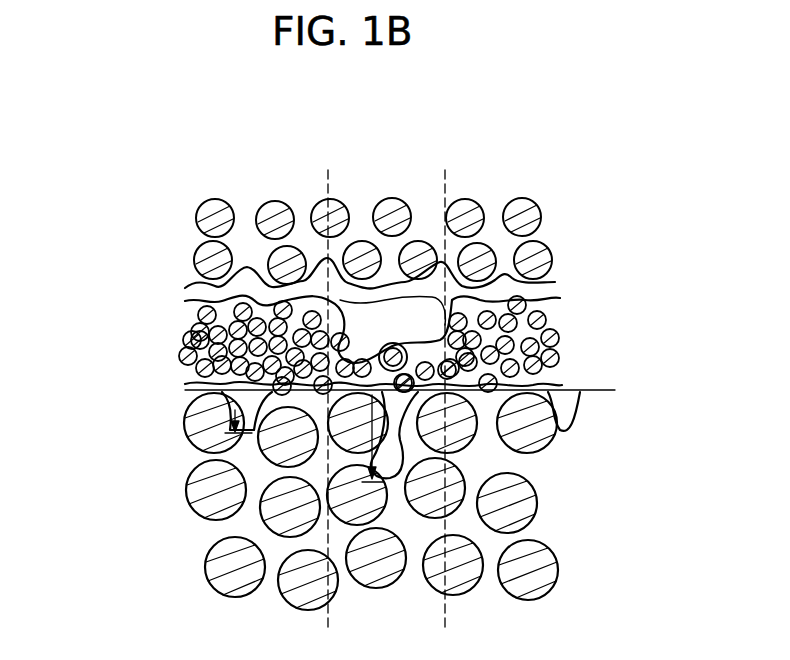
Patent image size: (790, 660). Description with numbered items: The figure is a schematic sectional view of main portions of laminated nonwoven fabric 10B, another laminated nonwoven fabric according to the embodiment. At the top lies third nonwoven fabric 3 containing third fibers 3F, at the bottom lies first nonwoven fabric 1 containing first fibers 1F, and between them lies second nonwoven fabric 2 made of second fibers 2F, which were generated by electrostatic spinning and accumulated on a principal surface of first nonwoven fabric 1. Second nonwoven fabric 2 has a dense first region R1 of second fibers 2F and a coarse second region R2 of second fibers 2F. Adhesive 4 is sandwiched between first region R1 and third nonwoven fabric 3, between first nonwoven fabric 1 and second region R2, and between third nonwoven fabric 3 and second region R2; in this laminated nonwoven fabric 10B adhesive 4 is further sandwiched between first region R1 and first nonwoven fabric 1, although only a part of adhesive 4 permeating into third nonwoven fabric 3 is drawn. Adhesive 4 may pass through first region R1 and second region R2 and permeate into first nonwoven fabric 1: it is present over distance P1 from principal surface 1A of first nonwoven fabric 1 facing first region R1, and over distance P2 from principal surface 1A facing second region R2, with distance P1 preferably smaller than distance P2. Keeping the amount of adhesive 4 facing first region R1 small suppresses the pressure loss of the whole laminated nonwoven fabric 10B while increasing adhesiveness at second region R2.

The laminated nonwoven fabric 10B is at (548, 151).
The third nonwoven fabric 3 is at (600, 193).
The third fibers 3F is at (540, 208).
The first region R1 is at (470, 275).
The second region R2 is at (332, 261).
The second nonwoven fabric 2 is at (85, 182).
The second fibers 2F is at (191, 338).
The adhesive 4 is at (555, 282).
The principal surface 1A is at (582, 391).
The first nonwoven fabric 1 is at (600, 392).
The first fibers 1F is at (520, 497).
The distance P1 is at (225, 414).
The distance P2 is at (387, 420).